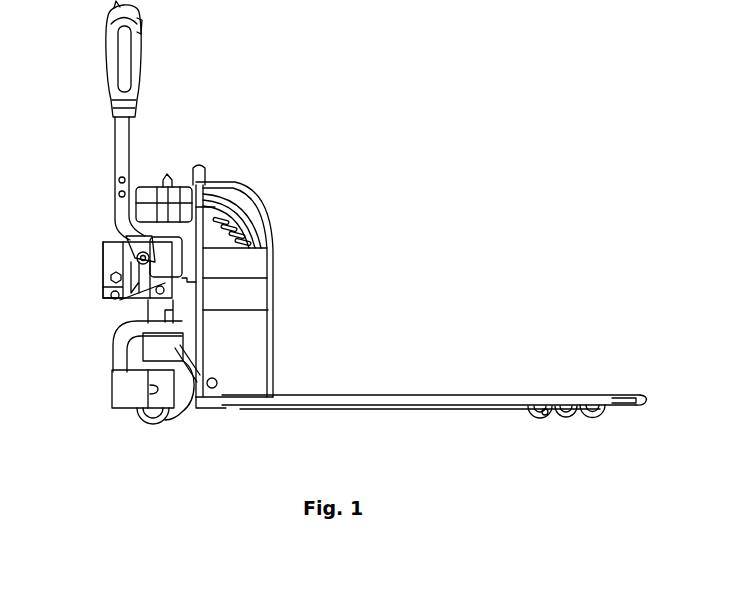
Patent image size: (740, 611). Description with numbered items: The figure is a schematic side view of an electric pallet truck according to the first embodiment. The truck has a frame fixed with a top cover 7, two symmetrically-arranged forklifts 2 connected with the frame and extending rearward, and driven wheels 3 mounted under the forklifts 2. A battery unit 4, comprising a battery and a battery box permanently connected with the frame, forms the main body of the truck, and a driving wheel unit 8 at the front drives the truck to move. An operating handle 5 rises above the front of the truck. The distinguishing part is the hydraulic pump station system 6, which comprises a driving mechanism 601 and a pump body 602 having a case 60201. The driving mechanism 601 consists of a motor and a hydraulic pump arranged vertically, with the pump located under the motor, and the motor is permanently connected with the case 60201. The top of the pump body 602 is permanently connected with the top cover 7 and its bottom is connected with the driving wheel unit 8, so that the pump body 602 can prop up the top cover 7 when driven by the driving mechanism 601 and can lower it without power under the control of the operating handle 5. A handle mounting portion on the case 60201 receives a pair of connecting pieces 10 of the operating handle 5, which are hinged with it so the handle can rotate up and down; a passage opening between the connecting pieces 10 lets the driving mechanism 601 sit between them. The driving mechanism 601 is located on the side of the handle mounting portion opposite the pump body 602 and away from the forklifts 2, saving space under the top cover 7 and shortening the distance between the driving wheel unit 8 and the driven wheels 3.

The forklifts 2 is at (415, 398).
The driven wheels 3 is at (563, 415).
The battery unit 4 is at (235, 277).
The operating handle 5 is at (128, 47).
The hydraulic pump station system 6 is at (38, 228).
The top cover 7 is at (148, 193).
The driving wheel unit 8 is at (155, 377).
The connecting pieces 10 is at (152, 245).
The driving mechanism 601 is at (112, 257).
The pump body 602 is at (147, 250).
The case 60201 is at (120, 302).